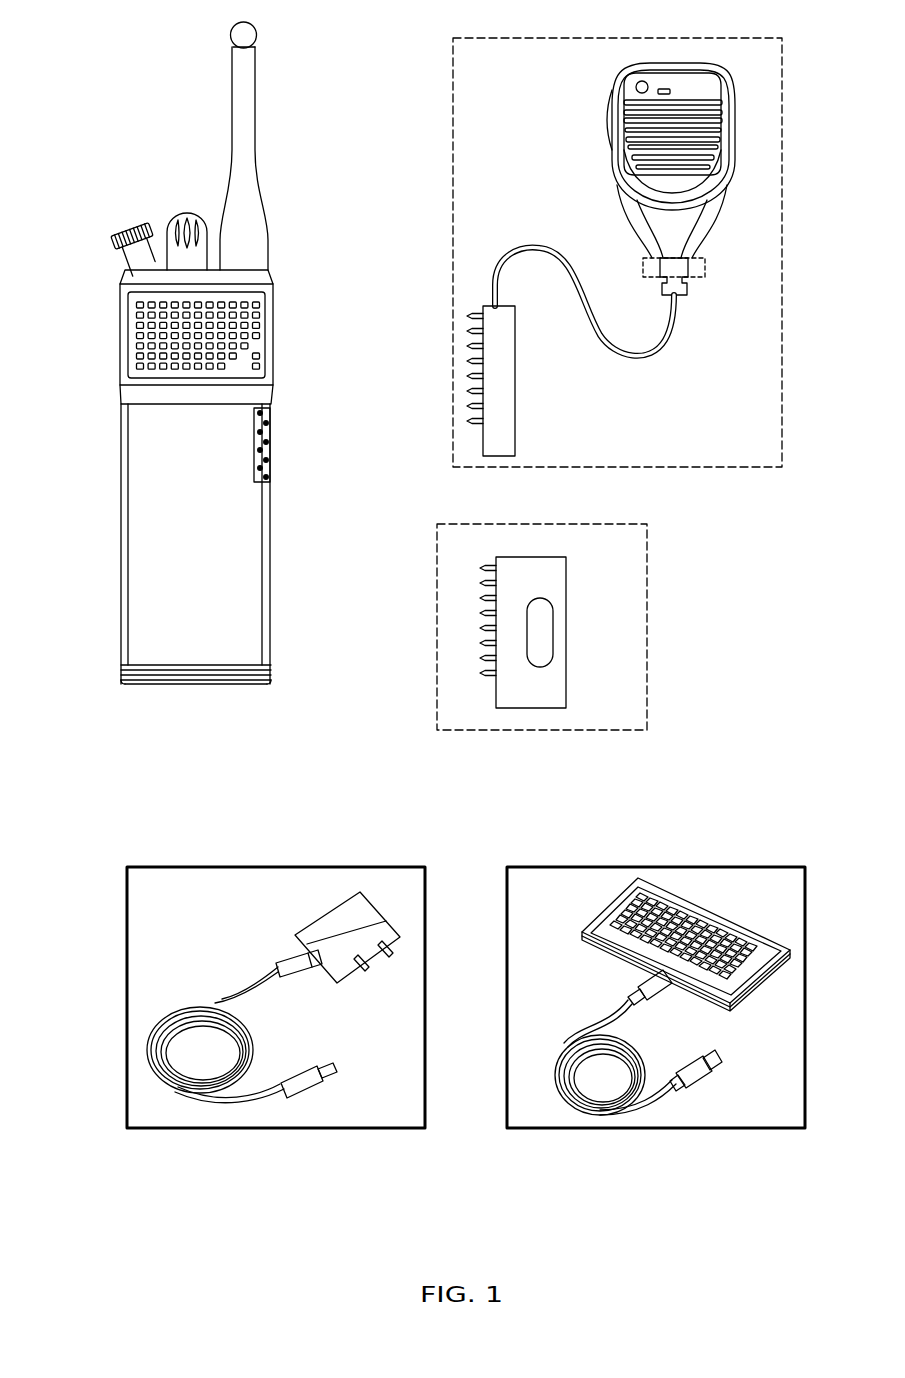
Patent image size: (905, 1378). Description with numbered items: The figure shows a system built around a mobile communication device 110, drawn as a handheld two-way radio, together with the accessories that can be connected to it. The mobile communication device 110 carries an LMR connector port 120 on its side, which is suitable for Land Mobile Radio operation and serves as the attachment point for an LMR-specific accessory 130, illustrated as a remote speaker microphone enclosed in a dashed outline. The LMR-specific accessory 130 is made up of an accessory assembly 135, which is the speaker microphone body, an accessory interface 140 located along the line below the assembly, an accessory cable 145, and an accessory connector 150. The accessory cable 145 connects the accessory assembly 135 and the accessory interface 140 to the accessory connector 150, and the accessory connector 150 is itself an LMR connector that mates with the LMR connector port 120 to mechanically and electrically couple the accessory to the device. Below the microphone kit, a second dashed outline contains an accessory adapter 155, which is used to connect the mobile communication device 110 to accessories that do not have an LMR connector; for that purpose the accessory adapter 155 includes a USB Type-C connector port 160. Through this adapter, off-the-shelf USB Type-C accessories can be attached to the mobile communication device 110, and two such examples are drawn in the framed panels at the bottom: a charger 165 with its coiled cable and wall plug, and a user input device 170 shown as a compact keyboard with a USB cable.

The mobile communication device 110 is at (121, 535).
The LMR connector port 120 is at (273, 452).
The LMR-specific accessory 130 is at (453, 254).
The accessory assembly 135 is at (612, 157).
The accessory interface 140 is at (705, 268).
The accessory cable 145 is at (668, 340).
The accessory connector 150 is at (515, 380).
The accessory adapter 155 is at (437, 625).
The USB Type-C connector port 160 is at (566, 632).
The charger 165 is at (127, 998).
The user input device 170 is at (507, 998).